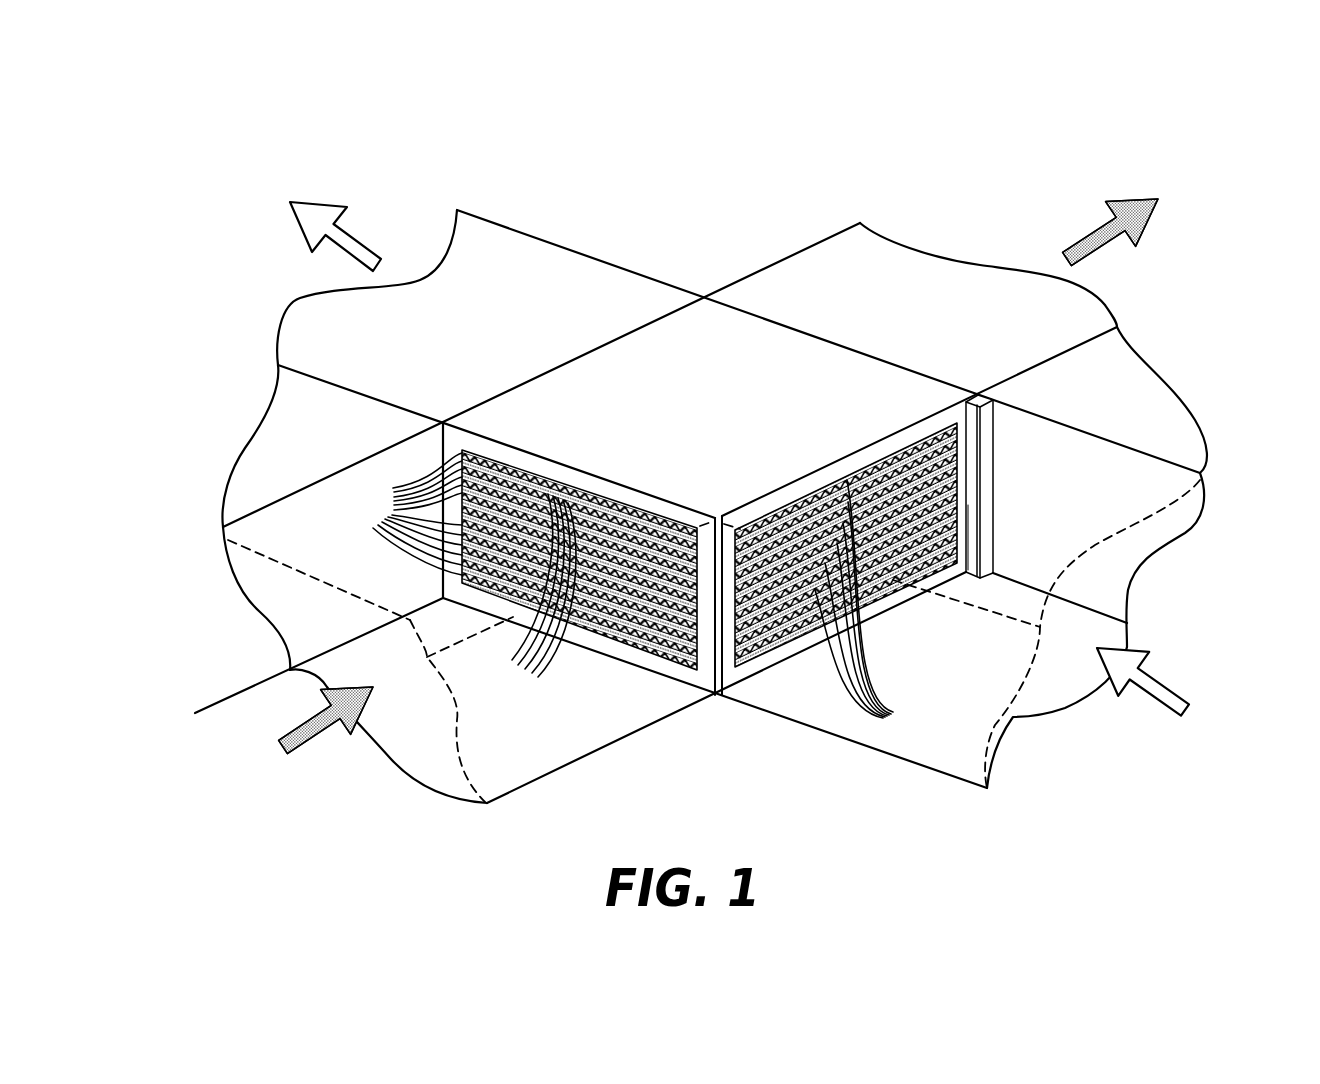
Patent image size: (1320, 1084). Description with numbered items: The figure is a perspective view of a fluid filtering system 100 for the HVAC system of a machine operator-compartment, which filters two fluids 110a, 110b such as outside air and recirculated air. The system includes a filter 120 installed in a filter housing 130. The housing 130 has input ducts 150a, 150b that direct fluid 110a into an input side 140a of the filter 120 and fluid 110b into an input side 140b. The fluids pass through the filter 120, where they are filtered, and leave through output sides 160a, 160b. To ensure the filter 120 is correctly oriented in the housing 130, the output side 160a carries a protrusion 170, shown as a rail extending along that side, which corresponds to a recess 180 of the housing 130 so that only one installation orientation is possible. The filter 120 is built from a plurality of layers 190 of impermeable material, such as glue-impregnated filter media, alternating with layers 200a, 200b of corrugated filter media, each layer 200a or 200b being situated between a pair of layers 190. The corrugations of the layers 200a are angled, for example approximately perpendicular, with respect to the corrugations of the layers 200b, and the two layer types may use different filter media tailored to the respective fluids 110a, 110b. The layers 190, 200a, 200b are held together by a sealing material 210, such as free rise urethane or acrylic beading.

The fluid filtering system 100 is at (1092, 100).
The fluid 110a is at (281, 748).
The fluid 110b is at (1186, 711).
The filter 120 is at (670, 350).
The filter housing 130 is at (563, 283).
The input side 140a is at (460, 436).
The input side 140b is at (738, 506).
The input duct 150a is at (567, 700).
The input duct 150b is at (1013, 717).
The output side 160a is at (890, 358).
The output side 160b is at (518, 388).
The protrusion 170 is at (973, 397).
The recess 180 is at (975, 508).
The layers of impermeable material 190 is at (410, 514).
The layer of corrugated filter media 200a is at (529, 595).
The layer of corrugated filter media 200b is at (872, 603).
The sealing material 210 is at (732, 677).